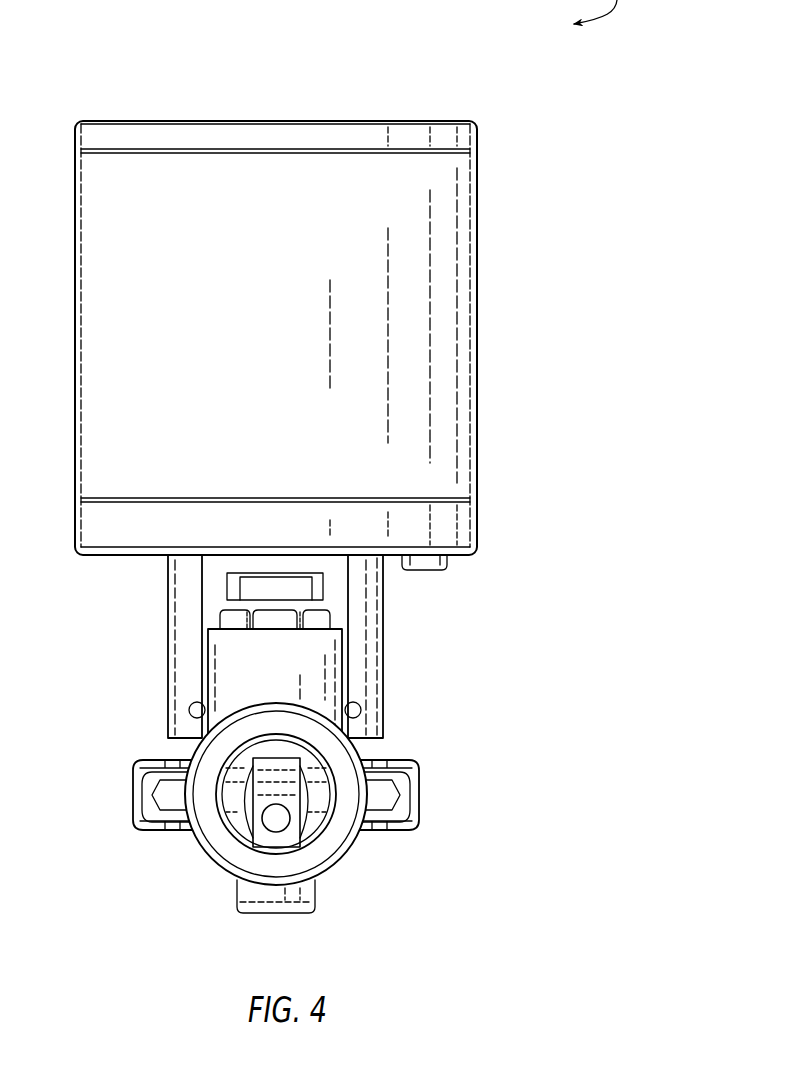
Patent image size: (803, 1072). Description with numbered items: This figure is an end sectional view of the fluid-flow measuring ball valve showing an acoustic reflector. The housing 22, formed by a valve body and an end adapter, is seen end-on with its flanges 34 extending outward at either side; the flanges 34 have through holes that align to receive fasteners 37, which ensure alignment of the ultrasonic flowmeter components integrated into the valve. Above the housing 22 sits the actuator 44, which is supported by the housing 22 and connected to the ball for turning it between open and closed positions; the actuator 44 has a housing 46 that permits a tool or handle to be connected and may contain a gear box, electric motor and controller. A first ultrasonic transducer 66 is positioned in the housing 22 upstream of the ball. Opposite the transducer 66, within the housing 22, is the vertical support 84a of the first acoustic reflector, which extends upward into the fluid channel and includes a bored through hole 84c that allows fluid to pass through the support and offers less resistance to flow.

The housing 22 is at (479, 687).
The flanges 34 is at (140, 826).
The fasteners 37 is at (175, 829).
The actuator 44 is at (609, 290).
The housing 46 is at (473, 198).
The first ultrasonic transducer 66 is at (345, 623).
The vertical support 84a is at (290, 835).
The bored through hole 84c is at (278, 817).